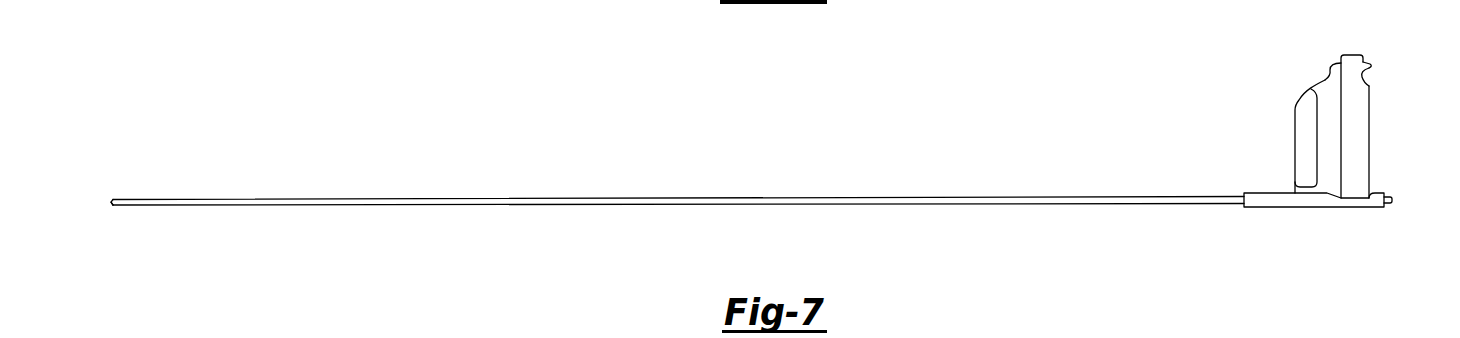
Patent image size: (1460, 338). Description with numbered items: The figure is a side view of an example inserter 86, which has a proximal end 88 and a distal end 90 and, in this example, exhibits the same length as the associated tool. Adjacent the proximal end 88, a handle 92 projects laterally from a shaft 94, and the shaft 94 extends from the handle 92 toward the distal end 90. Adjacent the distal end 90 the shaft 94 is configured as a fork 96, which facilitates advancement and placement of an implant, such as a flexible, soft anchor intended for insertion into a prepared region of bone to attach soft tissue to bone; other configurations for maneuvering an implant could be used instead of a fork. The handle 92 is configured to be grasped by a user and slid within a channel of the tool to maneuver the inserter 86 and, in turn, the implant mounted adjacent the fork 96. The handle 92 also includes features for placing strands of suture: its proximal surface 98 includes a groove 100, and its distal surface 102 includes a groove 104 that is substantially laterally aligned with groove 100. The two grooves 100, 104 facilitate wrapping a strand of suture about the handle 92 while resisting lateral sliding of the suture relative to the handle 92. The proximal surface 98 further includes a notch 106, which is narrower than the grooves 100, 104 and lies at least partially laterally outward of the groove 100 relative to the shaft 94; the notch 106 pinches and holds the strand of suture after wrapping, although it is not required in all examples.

The inserter 86 is at (946, 180).
The proximal end 88 is at (1392, 200).
The distal end 90 is at (114, 200).
The handle 92 is at (1268, 148).
The shaft 94 is at (685, 198).
The fork 96 is at (106, 209).
The proximal surface 98 is at (1369, 142).
The groove 100 is at (1364, 84).
The distal surface 102 is at (1305, 95).
The groove 104 is at (1328, 76).
The notch 106 is at (1384, 61).